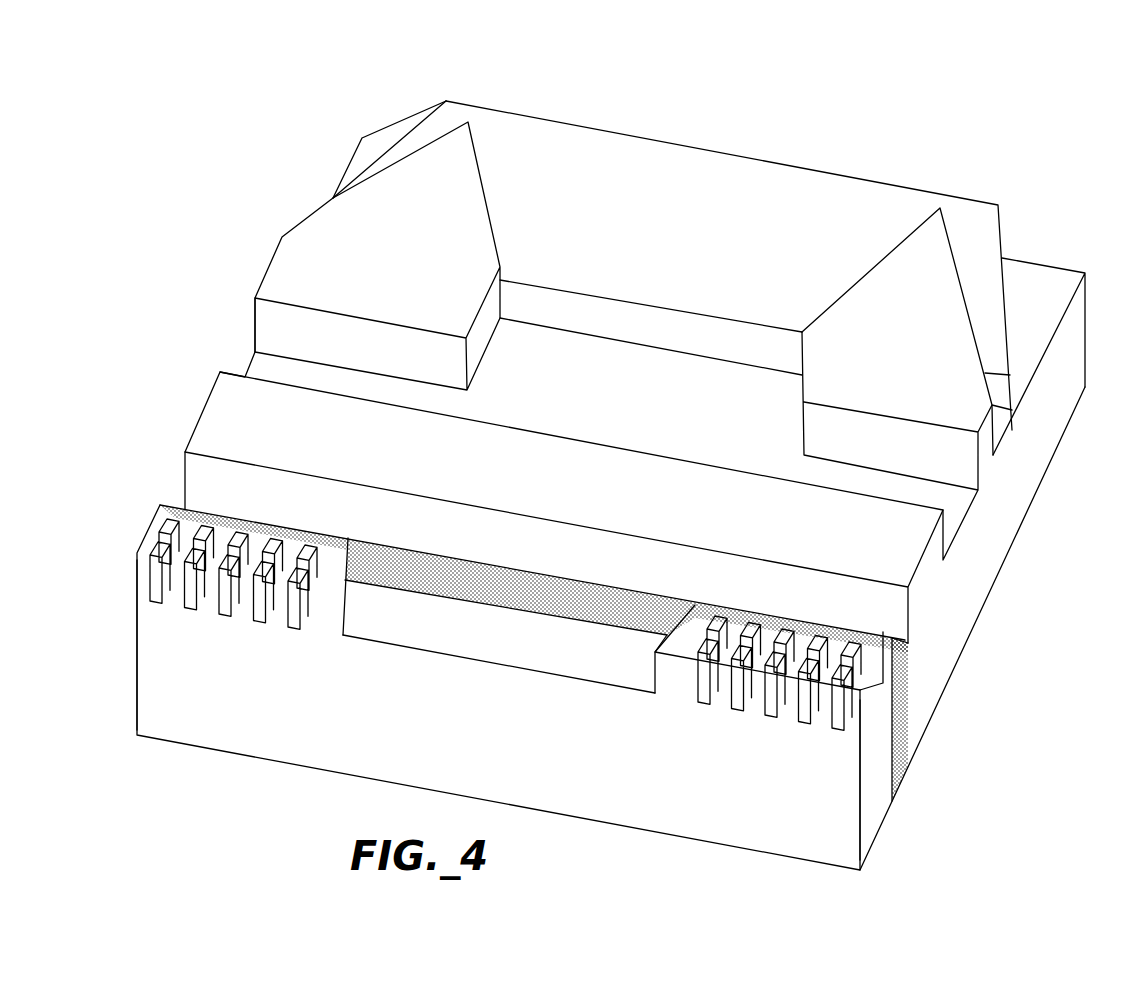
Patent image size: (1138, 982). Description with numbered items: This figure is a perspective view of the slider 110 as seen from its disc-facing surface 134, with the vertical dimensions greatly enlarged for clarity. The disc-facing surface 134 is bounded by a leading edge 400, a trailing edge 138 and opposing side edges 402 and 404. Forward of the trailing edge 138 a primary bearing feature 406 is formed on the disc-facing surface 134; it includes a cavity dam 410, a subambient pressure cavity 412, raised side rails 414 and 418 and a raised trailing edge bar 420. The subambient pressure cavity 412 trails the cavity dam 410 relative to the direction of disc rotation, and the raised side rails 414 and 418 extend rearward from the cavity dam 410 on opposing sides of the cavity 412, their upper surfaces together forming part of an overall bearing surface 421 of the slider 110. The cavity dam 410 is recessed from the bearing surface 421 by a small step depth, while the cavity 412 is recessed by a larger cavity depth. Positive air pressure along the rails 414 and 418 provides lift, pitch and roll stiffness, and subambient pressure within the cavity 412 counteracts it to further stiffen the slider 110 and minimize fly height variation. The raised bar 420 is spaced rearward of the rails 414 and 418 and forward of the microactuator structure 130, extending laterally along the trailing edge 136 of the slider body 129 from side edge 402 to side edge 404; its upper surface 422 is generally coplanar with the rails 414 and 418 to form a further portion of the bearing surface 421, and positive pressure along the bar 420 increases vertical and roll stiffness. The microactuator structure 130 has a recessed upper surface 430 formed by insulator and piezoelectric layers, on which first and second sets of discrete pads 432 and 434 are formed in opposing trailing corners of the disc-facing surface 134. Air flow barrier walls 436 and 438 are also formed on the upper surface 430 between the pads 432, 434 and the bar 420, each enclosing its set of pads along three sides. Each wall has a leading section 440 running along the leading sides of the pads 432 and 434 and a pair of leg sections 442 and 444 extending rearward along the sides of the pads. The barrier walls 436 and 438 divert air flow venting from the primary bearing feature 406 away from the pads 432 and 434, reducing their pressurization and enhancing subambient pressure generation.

The slider 110 is at (286, 156).
The slider body 129 is at (983, 557).
The microactuator structure 130 is at (878, 790).
The disc-facing surface 134 is at (779, 183).
The trailing edge 136 is at (908, 663).
The trailing edge 138 is at (490, 665).
The leading edge 400 is at (460, 100).
The side edge 402 is at (1055, 347).
The side edge 404 is at (353, 150).
The primary bearing feature 406 is at (246, 331).
The cavity dam 410 is at (640, 157).
The subambient pressure cavity 412 is at (616, 399).
The raised side rail 414 is at (970, 417).
The raised side rail 418 is at (277, 273).
The raised trailing edge bar 420 is at (203, 410).
The bearing surface 421 is at (940, 258).
The upper surface of bar 422 is at (553, 494).
The upper surface of microactuator structure 430 is at (529, 618).
The first set of discrete pads 432 is at (805, 720).
The second set of discrete pads 434 is at (262, 615).
The air flow barrier wall 436 is at (659, 633).
The air flow barrier wall 438 is at (353, 582).
The leading section 440 is at (198, 508).
The leg section 442 is at (137, 580).
The leg section 444 is at (350, 608).